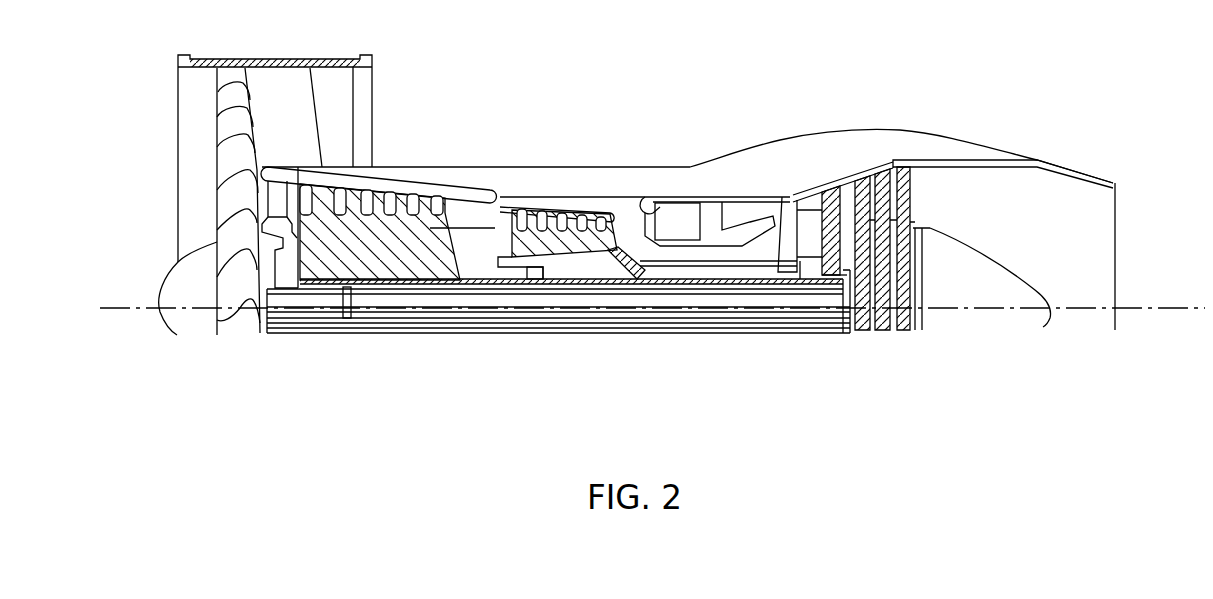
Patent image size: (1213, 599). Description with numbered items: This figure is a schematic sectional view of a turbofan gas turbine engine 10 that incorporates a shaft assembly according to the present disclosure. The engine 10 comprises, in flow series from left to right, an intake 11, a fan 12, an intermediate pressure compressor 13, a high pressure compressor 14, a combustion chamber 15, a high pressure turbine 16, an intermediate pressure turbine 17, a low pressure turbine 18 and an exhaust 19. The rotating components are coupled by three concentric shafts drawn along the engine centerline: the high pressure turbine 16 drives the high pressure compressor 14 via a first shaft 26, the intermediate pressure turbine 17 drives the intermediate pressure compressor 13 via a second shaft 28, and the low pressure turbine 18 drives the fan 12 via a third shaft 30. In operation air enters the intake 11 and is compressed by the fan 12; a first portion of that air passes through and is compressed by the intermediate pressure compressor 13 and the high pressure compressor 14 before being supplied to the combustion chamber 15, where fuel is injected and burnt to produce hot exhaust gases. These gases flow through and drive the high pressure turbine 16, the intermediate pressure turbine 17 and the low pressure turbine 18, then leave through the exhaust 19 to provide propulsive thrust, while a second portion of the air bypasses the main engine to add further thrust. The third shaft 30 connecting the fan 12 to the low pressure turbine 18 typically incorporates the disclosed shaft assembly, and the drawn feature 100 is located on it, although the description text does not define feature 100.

The turbofan gas turbine engine 10 is at (540, 88).
The intake 11 is at (185, 145).
The fan 12 is at (240, 92).
The intermediate pressure compressor 13 is at (377, 228).
The high pressure compressor 14 is at (553, 212).
The combustion chamber 15 is at (683, 213).
The high pressure turbine 16 is at (790, 195).
The intermediate pressure turbine 17 is at (807, 203).
The low pressure turbine 18 is at (890, 200).
The exhaust 19 is at (1102, 255).
The pin 100 is at (352, 298).
The third shaft 30 is at (658, 302).
The second shaft 28 is at (707, 283).
The first shaft 26 is at (780, 285).